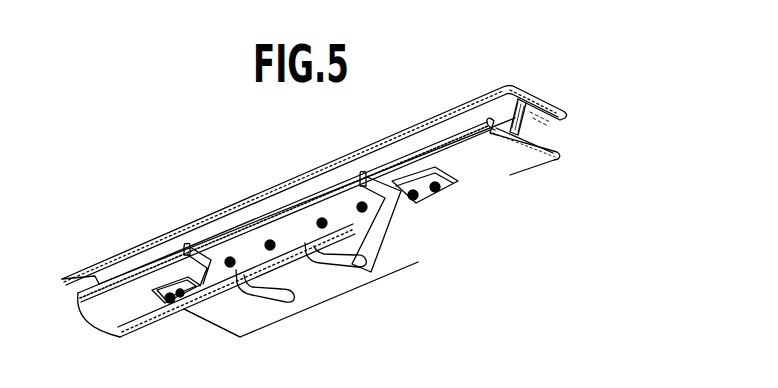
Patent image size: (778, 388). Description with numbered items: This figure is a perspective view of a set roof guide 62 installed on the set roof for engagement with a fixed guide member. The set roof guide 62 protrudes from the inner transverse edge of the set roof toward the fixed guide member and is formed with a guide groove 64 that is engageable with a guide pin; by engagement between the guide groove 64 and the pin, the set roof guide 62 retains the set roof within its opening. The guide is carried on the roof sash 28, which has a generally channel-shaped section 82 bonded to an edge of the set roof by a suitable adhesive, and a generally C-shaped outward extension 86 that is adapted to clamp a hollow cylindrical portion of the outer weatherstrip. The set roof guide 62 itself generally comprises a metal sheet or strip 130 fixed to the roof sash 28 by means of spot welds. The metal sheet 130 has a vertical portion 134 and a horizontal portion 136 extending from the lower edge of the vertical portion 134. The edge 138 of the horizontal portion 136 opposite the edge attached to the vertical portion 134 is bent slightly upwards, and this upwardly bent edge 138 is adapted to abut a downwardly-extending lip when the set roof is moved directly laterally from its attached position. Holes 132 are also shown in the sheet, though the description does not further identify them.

The set roof guide 62 is at (253, 193).
The roof sash 28 is at (521, 99).
The C-shaped outward extension 86 is at (500, 117).
The channel-shaped section 82 is at (540, 122).
The metal sheet 130 is at (342, 298).
The holes 132 is at (440, 190).
The vertical portion 134 is at (350, 246).
The horizontal portion 136 is at (250, 318).
The upwardly bent edge 138 is at (198, 300).
The guide groove 64 is at (280, 304).